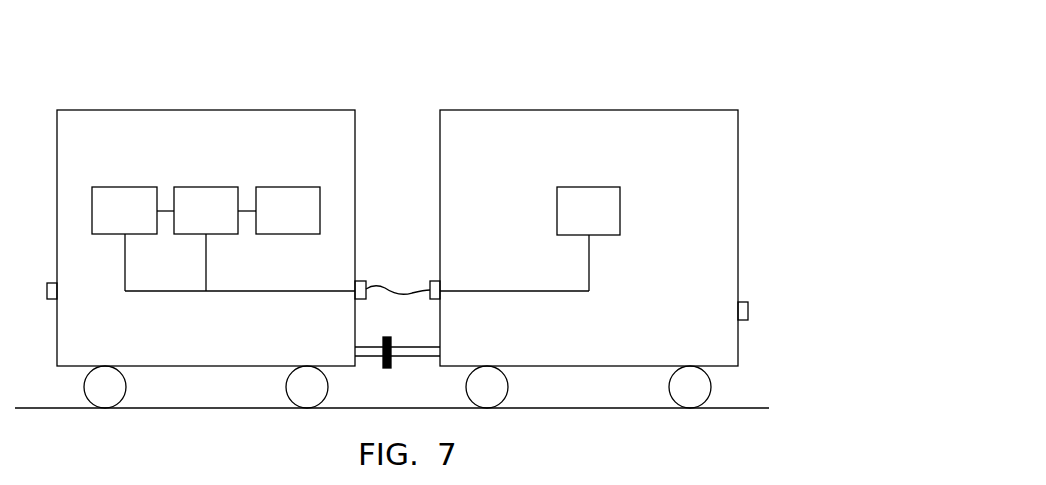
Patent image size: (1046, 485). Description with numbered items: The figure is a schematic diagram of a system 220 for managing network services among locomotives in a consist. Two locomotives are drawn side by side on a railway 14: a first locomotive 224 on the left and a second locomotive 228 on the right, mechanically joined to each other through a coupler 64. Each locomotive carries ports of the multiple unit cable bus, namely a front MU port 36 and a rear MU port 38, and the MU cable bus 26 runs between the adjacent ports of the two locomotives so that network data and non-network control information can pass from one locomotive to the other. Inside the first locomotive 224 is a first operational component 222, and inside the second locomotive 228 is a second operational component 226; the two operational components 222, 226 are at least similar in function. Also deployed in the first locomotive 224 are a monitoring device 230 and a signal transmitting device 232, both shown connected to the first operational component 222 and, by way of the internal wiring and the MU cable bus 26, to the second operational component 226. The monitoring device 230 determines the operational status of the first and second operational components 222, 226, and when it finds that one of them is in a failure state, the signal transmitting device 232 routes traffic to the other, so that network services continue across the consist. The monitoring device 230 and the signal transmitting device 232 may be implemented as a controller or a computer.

The railway 14 is at (48, 407).
The MU cable bus 26 is at (398, 268).
The front MU port 36 is at (46, 290).
The rear MU port 38 is at (358, 281).
The coupler 64 is at (417, 353).
The system for managing network services 220 is at (668, 74).
The first operational component 222 is at (118, 186).
The first locomotive 224 is at (135, 90).
The second operational component 226 is at (594, 185).
The second locomotive 228 is at (491, 98).
The monitoring device 230 is at (200, 186).
The signal transmitting device 232 is at (282, 186).